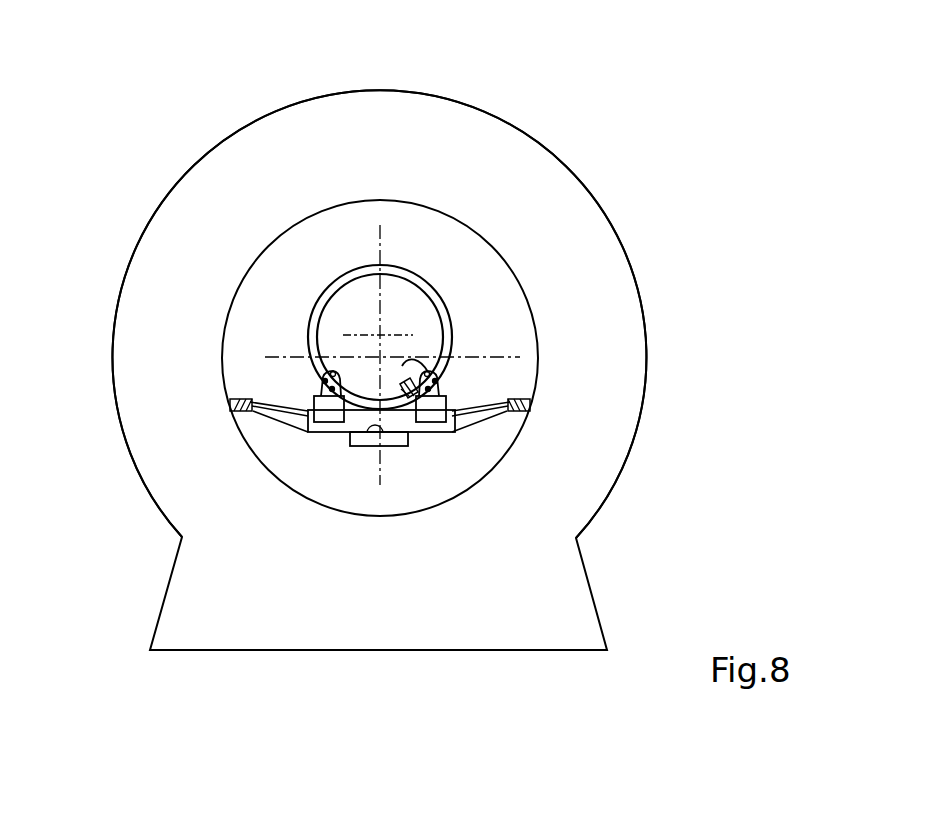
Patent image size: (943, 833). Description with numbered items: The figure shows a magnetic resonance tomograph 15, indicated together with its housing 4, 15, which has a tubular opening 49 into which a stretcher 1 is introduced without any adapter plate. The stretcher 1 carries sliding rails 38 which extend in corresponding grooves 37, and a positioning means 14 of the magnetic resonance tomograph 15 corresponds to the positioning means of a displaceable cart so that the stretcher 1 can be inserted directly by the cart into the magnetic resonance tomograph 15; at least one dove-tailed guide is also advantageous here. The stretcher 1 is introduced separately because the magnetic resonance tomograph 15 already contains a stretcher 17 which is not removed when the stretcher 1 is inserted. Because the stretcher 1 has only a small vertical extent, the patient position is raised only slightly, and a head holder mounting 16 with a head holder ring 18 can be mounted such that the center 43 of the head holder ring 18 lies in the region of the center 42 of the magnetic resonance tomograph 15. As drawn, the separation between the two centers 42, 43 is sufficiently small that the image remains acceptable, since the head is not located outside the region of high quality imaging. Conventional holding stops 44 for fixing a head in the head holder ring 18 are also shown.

The stretcher 1 is at (252, 402).
The gantry housing 4 is at (342, 314).
The magnetic resonance tomograph 15 is at (128, 237).
The tubular opening 49 is at (338, 238).
The head holder ring 18 is at (414, 355).
The center of the head holder ring 43 is at (380, 333).
The center of the magnetic resonance tomograph 42 is at (382, 355).
The holding stops 44 is at (425, 357).
The head holder mounting 16 is at (368, 431).
The stretcher 17 is at (246, 410).
The positioning means 14 is at (236, 412).
The grooves 37 is at (613, 449).
The sliding rails 38 is at (525, 410).